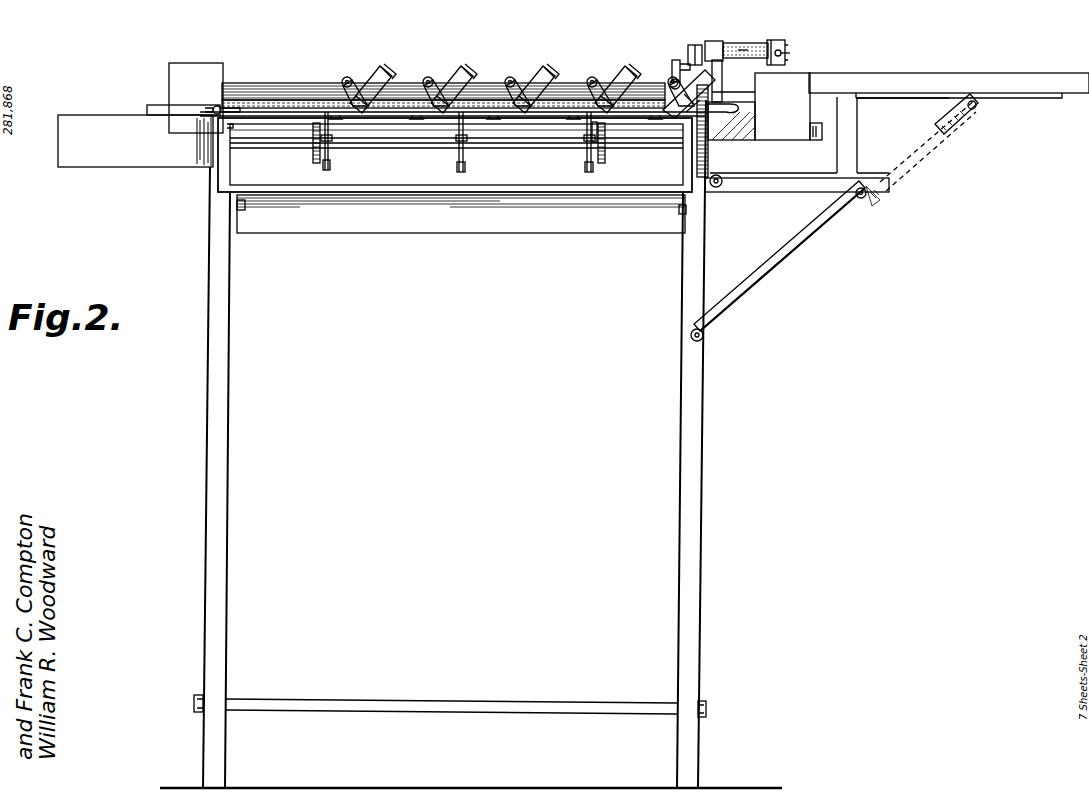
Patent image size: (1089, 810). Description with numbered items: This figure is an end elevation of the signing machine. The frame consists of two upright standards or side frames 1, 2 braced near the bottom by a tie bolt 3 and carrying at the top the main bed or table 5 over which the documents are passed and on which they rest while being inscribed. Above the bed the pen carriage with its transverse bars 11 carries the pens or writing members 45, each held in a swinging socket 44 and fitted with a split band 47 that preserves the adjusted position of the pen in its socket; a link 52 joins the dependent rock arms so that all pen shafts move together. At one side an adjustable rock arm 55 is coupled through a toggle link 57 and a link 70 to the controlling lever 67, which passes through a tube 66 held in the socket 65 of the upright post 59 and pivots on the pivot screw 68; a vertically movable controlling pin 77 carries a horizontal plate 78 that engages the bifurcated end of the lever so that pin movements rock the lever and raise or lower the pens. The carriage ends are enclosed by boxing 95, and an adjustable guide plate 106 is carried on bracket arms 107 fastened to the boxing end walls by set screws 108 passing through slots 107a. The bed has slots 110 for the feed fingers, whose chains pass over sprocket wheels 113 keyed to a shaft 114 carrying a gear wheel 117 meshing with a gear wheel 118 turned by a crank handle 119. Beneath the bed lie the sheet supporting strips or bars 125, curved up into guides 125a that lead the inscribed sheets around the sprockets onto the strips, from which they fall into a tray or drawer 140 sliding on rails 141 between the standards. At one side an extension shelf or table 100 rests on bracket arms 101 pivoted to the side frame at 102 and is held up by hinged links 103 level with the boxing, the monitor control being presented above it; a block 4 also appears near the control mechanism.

The upright standard 1 is at (218, 370).
The upright standard 2 is at (706, 468).
The tie bolt 3 is at (457, 703).
The block 4 is at (748, 128).
The main bed or table 5 is at (423, 128).
The transverse bar 11 is at (481, 96).
The swinging socket 44 is at (436, 82).
The pen or writing member 45 is at (548, 62).
The split band 47 is at (441, 78).
The link 52 is at (387, 98).
The adjustable rock arm 55 is at (672, 72).
The toggle link 57 is at (686, 56).
The upright post 59 is at (722, 68).
The socket 65 is at (715, 42).
The tube 66 is at (744, 60).
The controlling lever 67 is at (699, 45).
The pivot screw 68 is at (737, 52).
The link 70 is at (688, 48).
The controlling pin 77 is at (784, 41).
The horizontal plate 78 is at (791, 54).
The boxing 95 is at (170, 73).
The extension shelf or table 100 is at (918, 72).
The bracket arm 101 is at (795, 183).
The pivot 102 is at (718, 188).
The hinged link 103 is at (812, 238).
The guide plate 106 is at (252, 110).
The bracket arm 107 is at (152, 108).
The slot 107a is at (210, 113).
The set screw 108 is at (219, 106).
The slot 110 is at (580, 152).
The sprocket wheel 113 is at (313, 148).
The shaft 114 is at (410, 146).
The gear wheel 117 is at (709, 157).
The gear wheel 118 is at (722, 108).
The crank handle 119 is at (716, 118).
The sheet supporting strip or bar 125 is at (328, 175).
The guide 125a is at (330, 140).
The tray or drawer 140 is at (436, 228).
The rail 141 is at (235, 205).